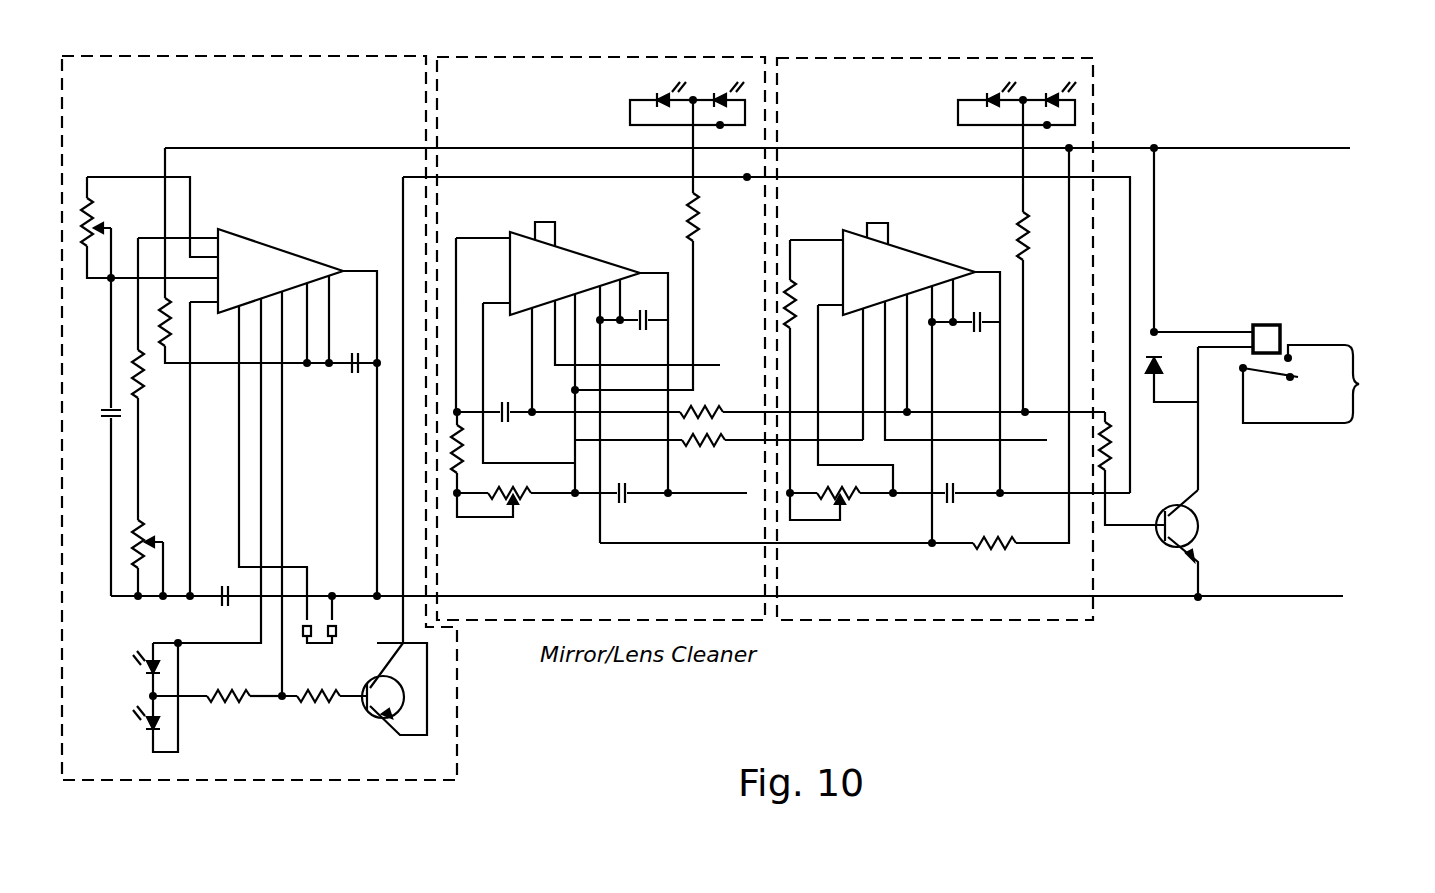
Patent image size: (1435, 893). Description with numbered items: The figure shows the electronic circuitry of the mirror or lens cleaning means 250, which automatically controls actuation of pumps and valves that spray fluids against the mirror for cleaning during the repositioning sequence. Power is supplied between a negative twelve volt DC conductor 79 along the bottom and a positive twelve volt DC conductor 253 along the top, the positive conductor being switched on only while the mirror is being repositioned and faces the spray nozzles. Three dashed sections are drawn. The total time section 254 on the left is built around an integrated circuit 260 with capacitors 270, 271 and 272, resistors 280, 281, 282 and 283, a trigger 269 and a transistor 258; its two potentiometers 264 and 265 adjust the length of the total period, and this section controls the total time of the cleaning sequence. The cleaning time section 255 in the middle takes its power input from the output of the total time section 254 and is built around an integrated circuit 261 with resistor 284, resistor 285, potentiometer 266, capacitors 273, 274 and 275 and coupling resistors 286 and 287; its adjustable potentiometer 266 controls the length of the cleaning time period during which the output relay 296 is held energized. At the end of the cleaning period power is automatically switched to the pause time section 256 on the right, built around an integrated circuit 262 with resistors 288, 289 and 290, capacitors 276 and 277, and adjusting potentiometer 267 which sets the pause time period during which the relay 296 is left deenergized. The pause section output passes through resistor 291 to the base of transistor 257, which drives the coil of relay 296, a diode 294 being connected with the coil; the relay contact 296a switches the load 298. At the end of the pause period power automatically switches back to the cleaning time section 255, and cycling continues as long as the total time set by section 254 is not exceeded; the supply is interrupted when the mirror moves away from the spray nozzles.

The mirror or lens cleaning means 250 is at (1222, 700).
The positive 12 volt DC conductor 253 is at (1359, 138).
The total time section 254 is at (254, 40).
The cleaning time section 255 is at (597, 40).
The pause time section 256 is at (902, 40).
The transistor 257 is at (1200, 508).
The transistor 258 is at (385, 728).
The integrated circuit 260 is at (288, 230).
The integrated circuit 261 is at (587, 232).
The integrated circuit 262 is at (917, 232).
The potentiometer 264 is at (104, 206).
The potentiometer 265 is at (150, 528).
The potentiometer 266 is at (522, 505).
The potentiometer 267 is at (850, 505).
The trigger 269 is at (314, 648).
The capacitor 270 is at (110, 412).
The capacitor 271 is at (228, 605).
The capacitor 272 is at (350, 378).
The capacitor 273 is at (484, 386).
The capacitor 274 is at (618, 504).
The capacitor 275 is at (648, 334).
The capacitor 276 is at (946, 504).
The capacitor 277 is at (982, 336).
The resistor 280 is at (148, 380).
The resistor 281 is at (222, 690).
The resistor 282 is at (325, 710).
The resistor 283 is at (172, 316).
The resistor 284 is at (468, 450).
The resistor 285 is at (686, 221).
The resistor 286 is at (695, 452).
The resistor 287 is at (698, 386).
The resistor 288 is at (798, 266).
The resistor 289 is at (1016, 222).
The resistor 290 is at (990, 553).
The resistor 291 is at (1113, 446).
The diode 294 is at (1142, 362).
The relay 296 is at (1261, 308).
The relay contact 296a is at (1274, 396).
The load 298 is at (1373, 384).
The negative 12 volt DC conductor 79 is at (1348, 598).